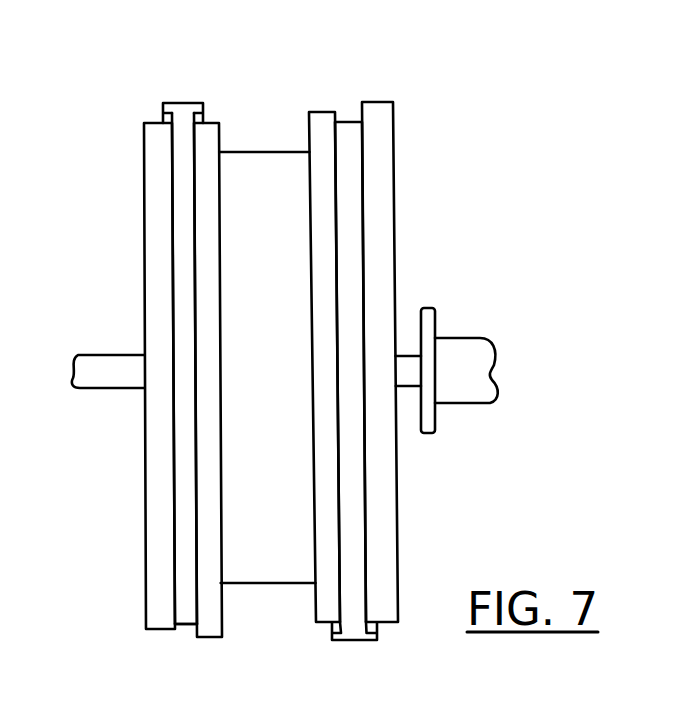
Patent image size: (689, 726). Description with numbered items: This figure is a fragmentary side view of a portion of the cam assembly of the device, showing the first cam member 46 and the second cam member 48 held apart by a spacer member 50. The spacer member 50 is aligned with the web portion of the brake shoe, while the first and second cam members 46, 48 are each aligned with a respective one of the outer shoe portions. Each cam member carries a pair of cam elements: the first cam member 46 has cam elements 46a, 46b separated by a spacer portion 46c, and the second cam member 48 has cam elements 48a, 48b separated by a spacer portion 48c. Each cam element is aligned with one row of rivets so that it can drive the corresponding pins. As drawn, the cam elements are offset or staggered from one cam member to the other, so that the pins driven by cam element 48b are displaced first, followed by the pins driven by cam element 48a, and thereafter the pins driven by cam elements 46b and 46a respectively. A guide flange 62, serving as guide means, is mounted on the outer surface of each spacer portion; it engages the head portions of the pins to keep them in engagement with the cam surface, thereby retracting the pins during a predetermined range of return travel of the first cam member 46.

The first cam member 46 is at (110, 180).
The cam element 46a is at (155, 122).
The cam element 46b is at (210, 122).
The spacer portion 46c is at (185, 625).
The second cam member 48 is at (425, 136).
The cam element 48a is at (320, 111).
The cam element 48b is at (383, 101).
The spacer portion 48c is at (348, 121).
The spacer member 50 is at (230, 231).
The guide flange 62 is at (362, 642).